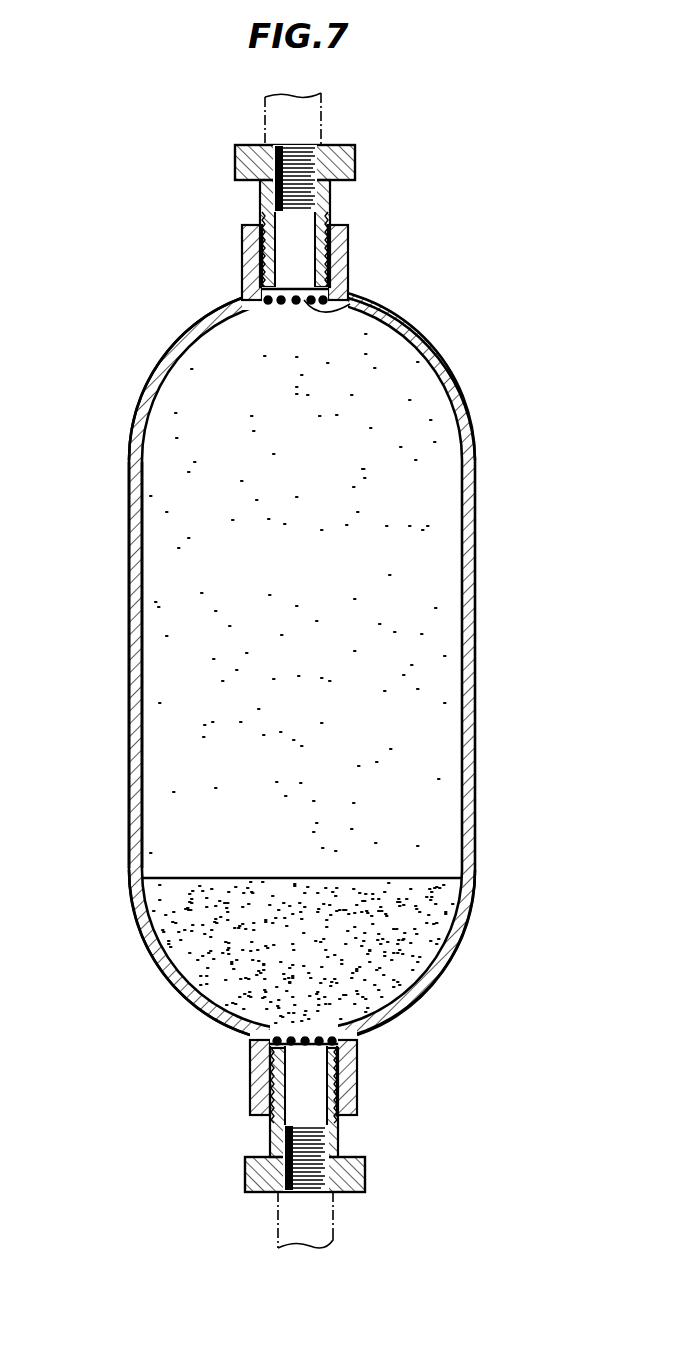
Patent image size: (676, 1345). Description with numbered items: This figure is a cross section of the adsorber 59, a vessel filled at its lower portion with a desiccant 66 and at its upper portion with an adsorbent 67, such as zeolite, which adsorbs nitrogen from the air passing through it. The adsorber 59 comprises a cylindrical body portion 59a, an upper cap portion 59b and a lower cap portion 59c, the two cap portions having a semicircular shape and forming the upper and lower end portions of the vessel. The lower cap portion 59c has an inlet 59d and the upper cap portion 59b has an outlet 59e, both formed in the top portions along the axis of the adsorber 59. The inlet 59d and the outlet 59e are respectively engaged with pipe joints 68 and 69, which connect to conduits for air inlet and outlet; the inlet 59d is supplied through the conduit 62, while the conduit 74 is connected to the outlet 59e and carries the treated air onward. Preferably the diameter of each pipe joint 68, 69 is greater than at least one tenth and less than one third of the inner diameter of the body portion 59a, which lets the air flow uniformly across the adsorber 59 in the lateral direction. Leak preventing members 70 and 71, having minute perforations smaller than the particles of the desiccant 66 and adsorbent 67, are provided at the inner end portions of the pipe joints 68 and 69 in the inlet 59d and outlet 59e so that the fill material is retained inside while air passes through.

The adsorber 59 is at (382, 89).
The cylindrical body portion 59a is at (135, 675).
The upper cap portion 59b is at (208, 322).
The lower cap portion 59c is at (195, 1010).
The inlet 59d is at (352, 1088).
The outlet 59e is at (338, 268).
The conduit 62 is at (333, 1232).
The desiccant 66 is at (416, 922).
The adsorbent 67 is at (404, 545).
The pipe joint 68 is at (247, 1175).
The pipe joint 69 is at (355, 163).
The leak preventing member 70 is at (312, 1035).
The leak preventing member 71 is at (346, 300).
The conduit 74 is at (323, 133).